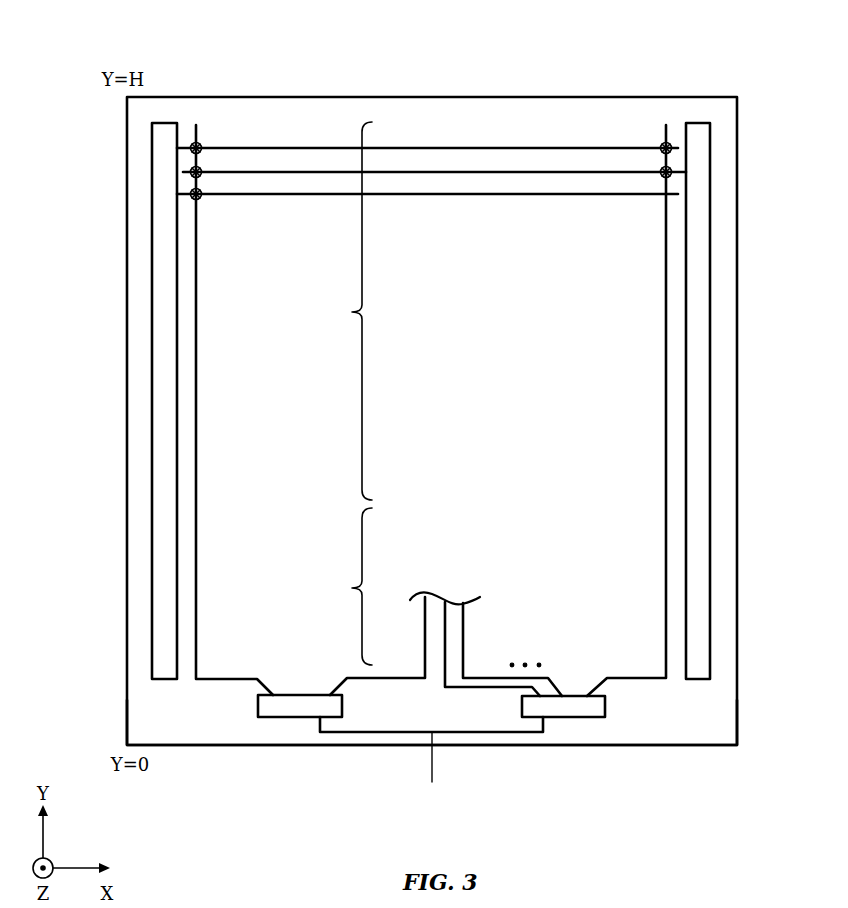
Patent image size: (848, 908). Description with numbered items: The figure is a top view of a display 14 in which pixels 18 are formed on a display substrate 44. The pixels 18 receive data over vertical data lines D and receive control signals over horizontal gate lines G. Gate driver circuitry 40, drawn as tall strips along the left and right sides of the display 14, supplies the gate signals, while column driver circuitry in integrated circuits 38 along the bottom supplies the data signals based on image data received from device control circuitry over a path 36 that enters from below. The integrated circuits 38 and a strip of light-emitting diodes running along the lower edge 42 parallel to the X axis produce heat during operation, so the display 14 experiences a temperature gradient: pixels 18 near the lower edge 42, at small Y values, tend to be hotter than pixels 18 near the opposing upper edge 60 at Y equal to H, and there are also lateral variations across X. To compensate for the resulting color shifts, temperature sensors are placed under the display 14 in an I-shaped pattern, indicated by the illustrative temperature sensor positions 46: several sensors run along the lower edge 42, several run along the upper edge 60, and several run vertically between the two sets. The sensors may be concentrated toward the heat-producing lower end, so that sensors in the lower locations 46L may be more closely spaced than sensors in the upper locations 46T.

The display 14 is at (585, 68).
The pixels 18 is at (201, 198).
The path 36 is at (437, 763).
The integrated circuits 38 is at (300, 707).
The gate driver circuitry 40 is at (163, 668).
The lower edge 42 is at (118, 733).
The display substrate 44 is at (737, 108).
The temperature sensor positions 46 is at (217, 158).
The temperature sensor locations 46T is at (344, 311).
The temperature sensor locations 46L is at (344, 586).
The upper edge 60 is at (115, 113).